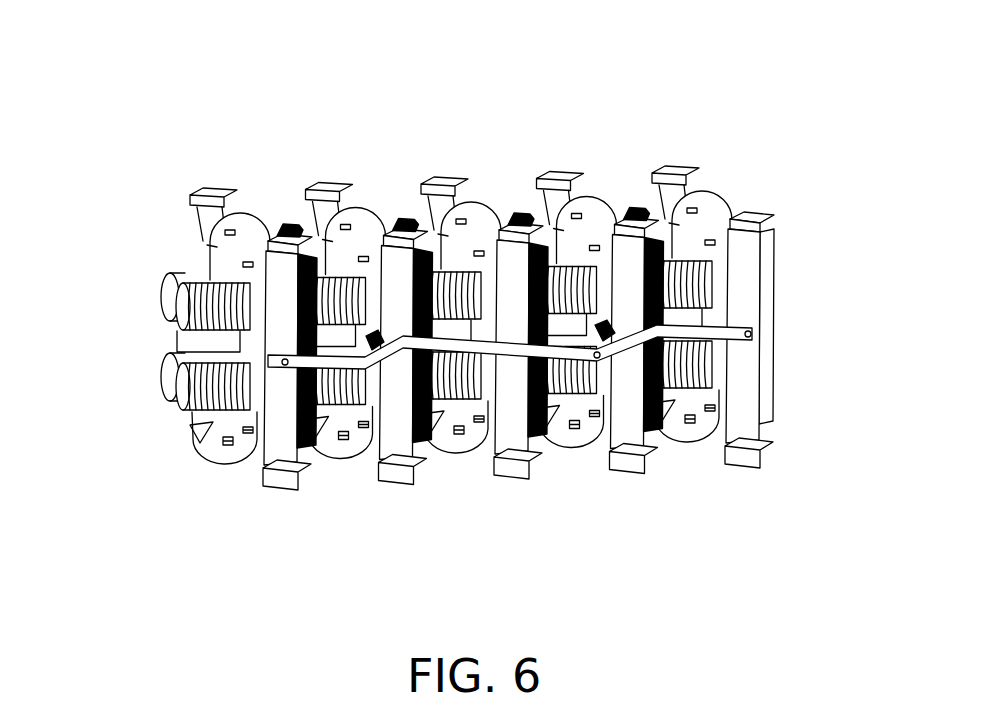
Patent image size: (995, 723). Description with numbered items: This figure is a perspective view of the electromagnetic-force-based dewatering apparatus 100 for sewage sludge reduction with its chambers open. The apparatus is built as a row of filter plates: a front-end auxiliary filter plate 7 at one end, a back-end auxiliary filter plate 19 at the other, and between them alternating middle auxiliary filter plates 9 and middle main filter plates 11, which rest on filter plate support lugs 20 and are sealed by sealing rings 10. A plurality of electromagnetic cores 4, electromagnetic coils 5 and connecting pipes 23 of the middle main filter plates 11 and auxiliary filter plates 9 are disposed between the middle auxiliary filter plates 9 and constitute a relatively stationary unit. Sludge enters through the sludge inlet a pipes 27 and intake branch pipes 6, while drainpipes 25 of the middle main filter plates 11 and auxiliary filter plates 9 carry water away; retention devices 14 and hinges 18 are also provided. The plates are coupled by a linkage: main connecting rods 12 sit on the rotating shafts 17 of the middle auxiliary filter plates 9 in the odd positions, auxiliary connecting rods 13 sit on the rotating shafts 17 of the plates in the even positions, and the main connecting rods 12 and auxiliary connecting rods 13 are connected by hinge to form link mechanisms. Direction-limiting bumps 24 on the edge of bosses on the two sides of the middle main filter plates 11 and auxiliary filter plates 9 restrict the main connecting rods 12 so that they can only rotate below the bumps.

The electromagnetic-force-based dewatering apparatus 100 is at (98, 51).
The electromagnetic core 4 is at (158, 285).
The electromagnetic coil 5 is at (200, 270).
The front-end auxiliary filter plate 7 is at (253, 232).
The sealing ring 10 is at (290, 228).
The intake branch pipe 6 is at (378, 245).
The middle auxiliary filter plate 9 is at (365, 265).
The middle main filter plate 11 is at (425, 270).
The retention device 14 is at (558, 232).
The main connecting rod 12 is at (623, 210).
The auxiliary connecting rod 13 is at (700, 270).
The back-end auxiliary filter plate 19 is at (743, 298).
The filter plate support lug 20 is at (740, 453).
The sludge inlet a pipe 27 is at (182, 410).
The drainpipe 25 is at (340, 375).
The direction-limiting bump 24 is at (378, 390).
The connecting pipe 23 is at (495, 458).
The hinge 18 is at (612, 400).
The rotating shaft 17 is at (670, 388).